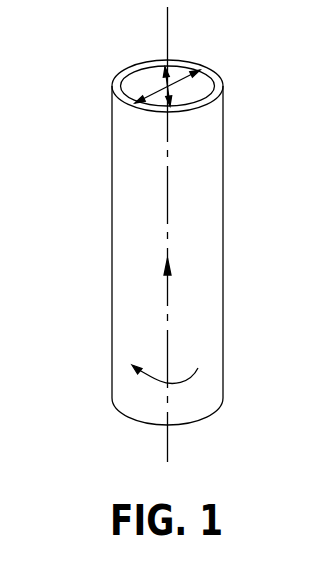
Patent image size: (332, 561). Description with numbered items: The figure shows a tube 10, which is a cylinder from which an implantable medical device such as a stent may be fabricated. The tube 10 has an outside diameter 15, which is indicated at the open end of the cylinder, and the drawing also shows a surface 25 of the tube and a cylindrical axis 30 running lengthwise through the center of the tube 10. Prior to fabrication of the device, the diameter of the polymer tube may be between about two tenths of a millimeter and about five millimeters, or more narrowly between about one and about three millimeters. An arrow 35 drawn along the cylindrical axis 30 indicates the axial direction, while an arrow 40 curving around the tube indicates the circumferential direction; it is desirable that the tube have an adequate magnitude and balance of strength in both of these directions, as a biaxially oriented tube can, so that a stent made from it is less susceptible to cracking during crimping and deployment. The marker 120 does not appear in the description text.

The tube 10 is at (160, 248).
The outside diameter 15 is at (182, 73).
The surface 25 is at (203, 315).
The cylindrical axis 30 is at (168, 173).
The arrow 35 is at (168, 285).
The arrow 40 is at (185, 380).
The wall thickness 120 is at (165, 80).